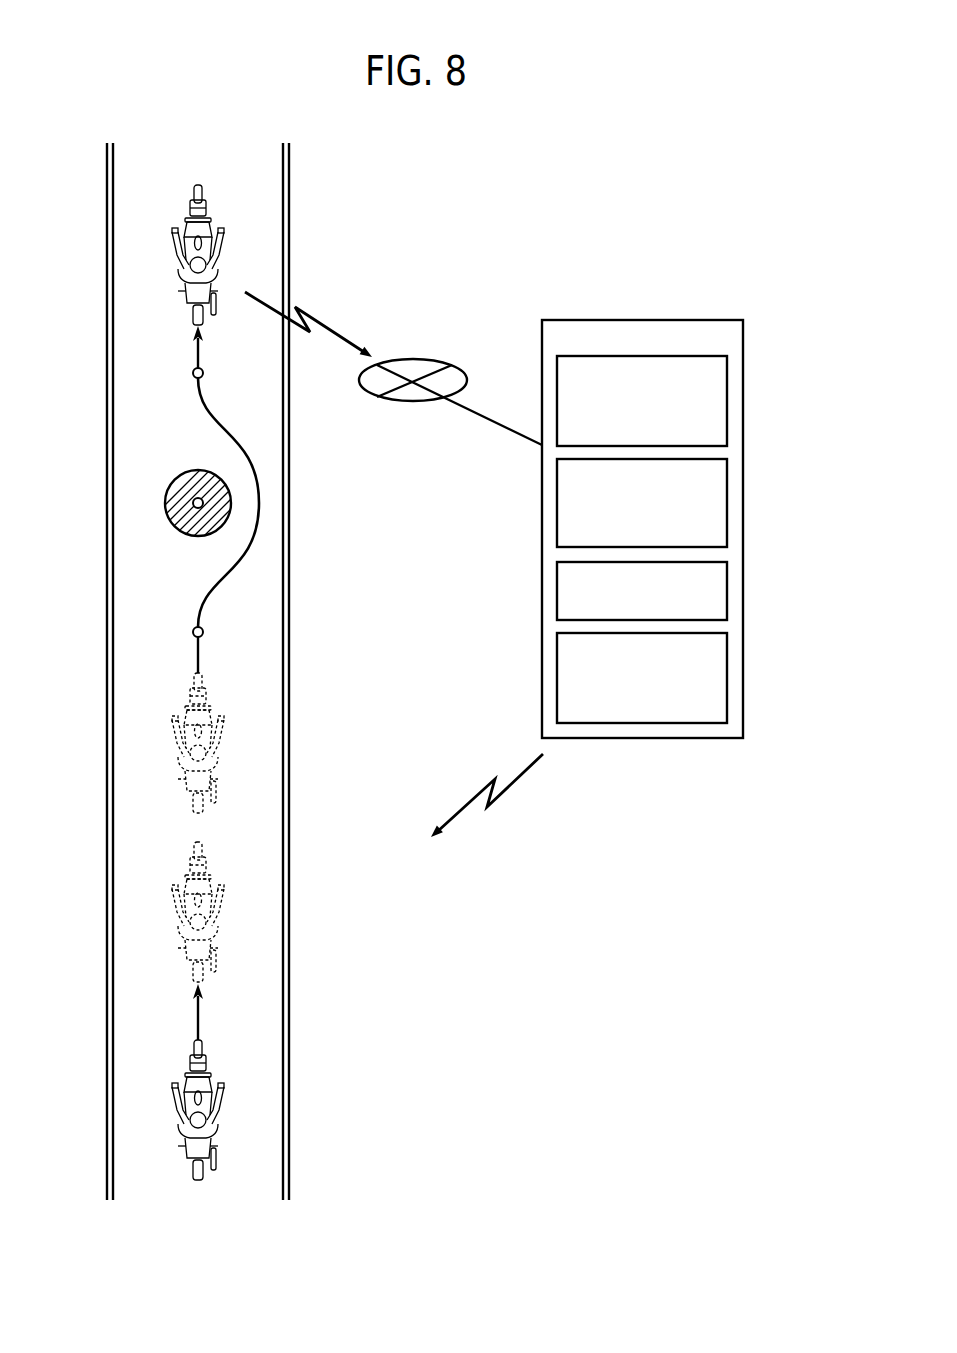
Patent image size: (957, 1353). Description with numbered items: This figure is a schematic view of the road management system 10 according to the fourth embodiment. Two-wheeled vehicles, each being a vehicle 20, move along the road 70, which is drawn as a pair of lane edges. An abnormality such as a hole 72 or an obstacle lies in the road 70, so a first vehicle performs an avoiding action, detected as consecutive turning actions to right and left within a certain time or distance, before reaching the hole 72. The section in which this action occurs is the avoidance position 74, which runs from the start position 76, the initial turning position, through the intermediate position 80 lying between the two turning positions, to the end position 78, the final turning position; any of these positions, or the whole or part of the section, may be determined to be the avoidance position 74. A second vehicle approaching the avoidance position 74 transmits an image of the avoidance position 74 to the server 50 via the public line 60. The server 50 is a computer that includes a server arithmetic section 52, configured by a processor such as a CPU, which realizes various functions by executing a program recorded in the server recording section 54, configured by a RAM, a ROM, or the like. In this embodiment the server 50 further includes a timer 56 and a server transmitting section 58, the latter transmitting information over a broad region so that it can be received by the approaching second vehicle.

The road management system 10 is at (499, 158).
The vehicle 20 is at (199, 220).
The server 50 is at (673, 320).
The server arithmetic section 52 is at (727, 417).
The server recording section 54 is at (727, 521).
The timer 56 is at (727, 592).
The server transmitting section 58 is at (727, 695).
The public line 60 is at (465, 370).
The road 70 is at (289, 1205).
The hole 72 is at (165, 497).
The avoidance position 74 is at (80, 375).
The start position 76 is at (193, 628).
The end position 78 is at (193, 372).
The intermediate position 80 is at (197, 497).